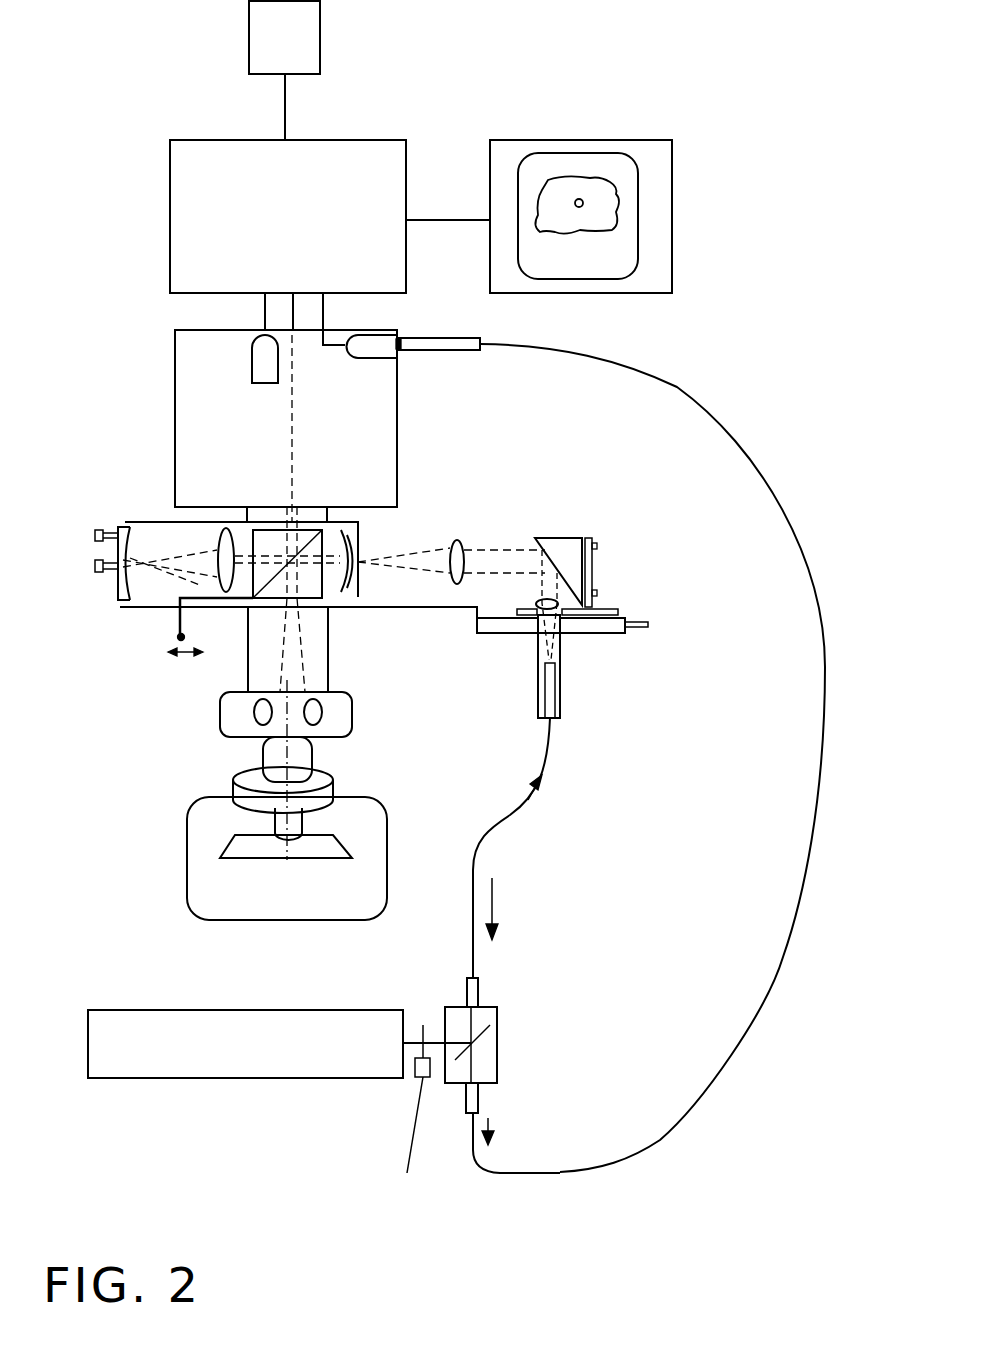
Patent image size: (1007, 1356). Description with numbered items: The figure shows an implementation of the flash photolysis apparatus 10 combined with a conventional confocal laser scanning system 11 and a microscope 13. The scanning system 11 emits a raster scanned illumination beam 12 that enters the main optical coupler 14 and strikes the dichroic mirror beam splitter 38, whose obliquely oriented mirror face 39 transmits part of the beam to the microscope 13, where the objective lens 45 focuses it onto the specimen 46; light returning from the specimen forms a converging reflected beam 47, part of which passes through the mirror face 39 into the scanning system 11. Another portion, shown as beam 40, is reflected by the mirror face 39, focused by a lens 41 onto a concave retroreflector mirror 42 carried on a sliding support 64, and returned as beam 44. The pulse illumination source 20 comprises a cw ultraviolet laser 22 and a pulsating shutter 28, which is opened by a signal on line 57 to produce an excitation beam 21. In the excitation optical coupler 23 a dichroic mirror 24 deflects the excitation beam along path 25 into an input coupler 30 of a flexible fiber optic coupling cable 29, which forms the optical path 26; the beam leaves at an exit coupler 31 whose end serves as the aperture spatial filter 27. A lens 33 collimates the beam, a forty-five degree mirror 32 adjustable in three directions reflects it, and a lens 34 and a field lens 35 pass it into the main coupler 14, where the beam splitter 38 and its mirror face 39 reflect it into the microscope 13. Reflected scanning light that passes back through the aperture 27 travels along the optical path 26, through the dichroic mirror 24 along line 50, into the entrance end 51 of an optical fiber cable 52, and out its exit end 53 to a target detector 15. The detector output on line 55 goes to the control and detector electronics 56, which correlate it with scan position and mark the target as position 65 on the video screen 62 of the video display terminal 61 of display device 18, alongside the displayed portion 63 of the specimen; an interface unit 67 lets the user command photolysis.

The flash photolysis apparatus 10 is at (76, 539).
The scanning system 11 is at (155, 386).
The scanning illumination beam 12 is at (298, 515).
The microscope 13 is at (206, 713).
The main optical coupler 14 is at (130, 622).
The target detector 15 is at (375, 355).
The display device 18 is at (586, 138).
The pulse illumination source 20 is at (260, 993).
The excitation beam 21 is at (430, 550).
The cw ultraviolet laser 22 is at (272, 1078).
The excitation optical coupler 23 is at (455, 1007).
The dichroic mirror 24 is at (478, 1040).
The path 25 is at (472, 1018).
The optical path 26 is at (572, 780).
The aperture spatial filter 27 is at (572, 667).
The pulsating shutter 28 is at (413, 1078).
The fiber optic coupling cable 29 is at (495, 830).
The input coupler 30 is at (480, 985).
The exit coupler 31 is at (548, 665).
The mirror 32 is at (563, 536).
The lens 33 is at (538, 603).
The lens 34 is at (450, 583).
The field lens 35 is at (358, 568).
The beam splitter 38 is at (313, 587).
The mirror face 39 is at (270, 585).
The reflected beam 40 is at (155, 562).
The lens 41 is at (216, 542).
The retroreflector mirror 42 is at (118, 590).
The beam 44 is at (174, 573).
The objective lens 45 is at (280, 847).
The specimen 46 is at (287, 843).
The converging reflected beam 47 is at (283, 648).
The line 50 is at (468, 1066).
The entrance end 51 is at (480, 1100).
The optical fiber cable 52 is at (825, 693).
The exit end 53 is at (430, 338).
The line 55 is at (323, 313).
The control and detector electronics 56 is at (327, 140).
The line 57 is at (410, 1142).
The video display terminal 61 is at (672, 157).
The video screen 62 is at (625, 263).
The portion of the specimen 63 is at (605, 222).
The sliding support 64 is at (180, 640).
The position marker 65 is at (583, 203).
The interface unit 67 is at (322, 40).